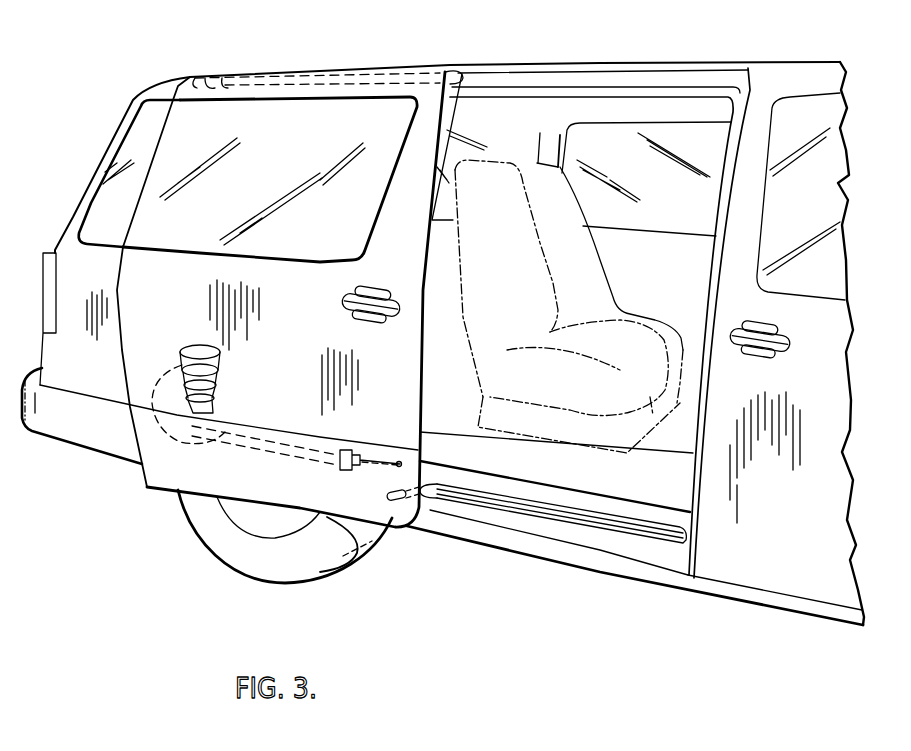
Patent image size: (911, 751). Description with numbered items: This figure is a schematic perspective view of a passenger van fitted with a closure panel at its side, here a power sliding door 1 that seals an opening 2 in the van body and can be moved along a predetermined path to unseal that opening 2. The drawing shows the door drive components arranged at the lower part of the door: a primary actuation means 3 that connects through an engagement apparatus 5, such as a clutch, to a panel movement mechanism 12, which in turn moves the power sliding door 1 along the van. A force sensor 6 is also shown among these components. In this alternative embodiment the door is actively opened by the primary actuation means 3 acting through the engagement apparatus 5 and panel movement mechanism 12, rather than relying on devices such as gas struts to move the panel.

The power sliding door 1 is at (424, 96).
The opening 2 is at (590, 86).
The primary actuation means 3 is at (177, 440).
The engagement apparatus 5 is at (188, 404).
The force sensor 6 is at (265, 445).
The panel movement mechanism 12 is at (338, 472).